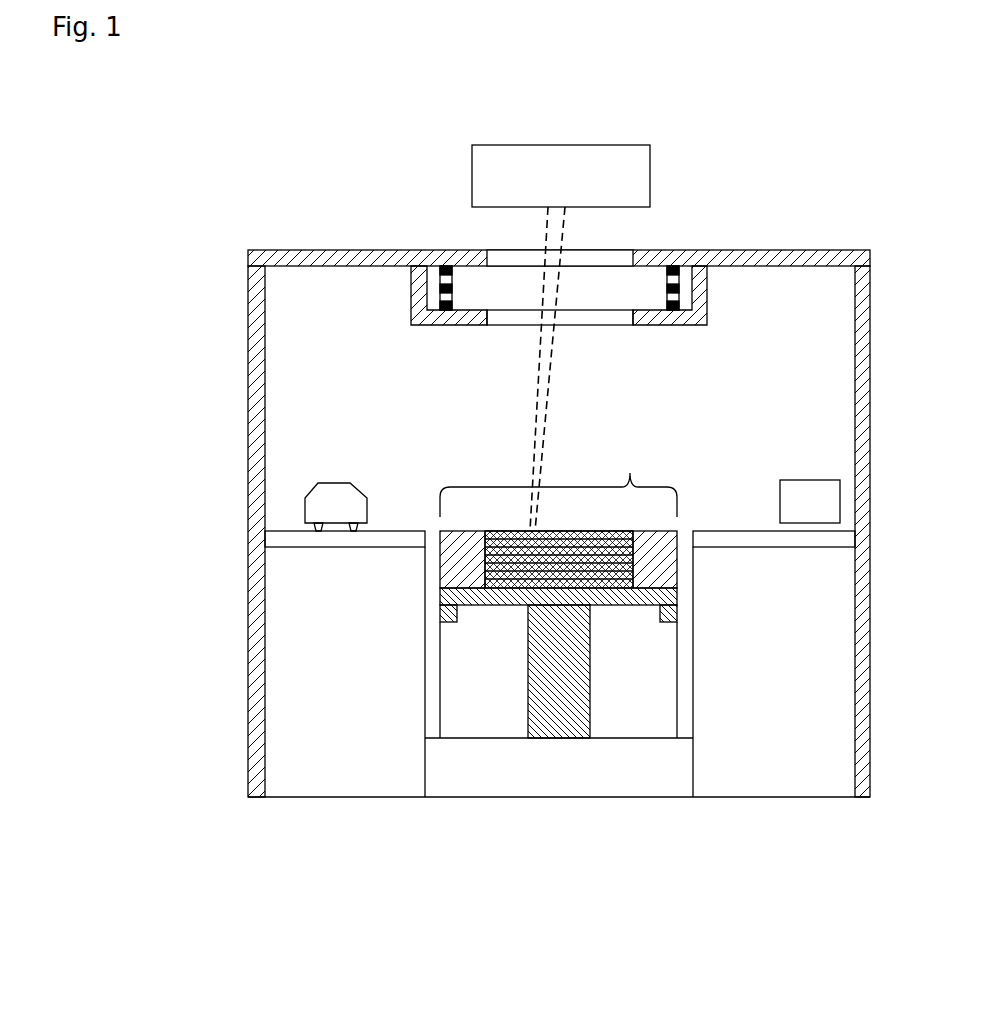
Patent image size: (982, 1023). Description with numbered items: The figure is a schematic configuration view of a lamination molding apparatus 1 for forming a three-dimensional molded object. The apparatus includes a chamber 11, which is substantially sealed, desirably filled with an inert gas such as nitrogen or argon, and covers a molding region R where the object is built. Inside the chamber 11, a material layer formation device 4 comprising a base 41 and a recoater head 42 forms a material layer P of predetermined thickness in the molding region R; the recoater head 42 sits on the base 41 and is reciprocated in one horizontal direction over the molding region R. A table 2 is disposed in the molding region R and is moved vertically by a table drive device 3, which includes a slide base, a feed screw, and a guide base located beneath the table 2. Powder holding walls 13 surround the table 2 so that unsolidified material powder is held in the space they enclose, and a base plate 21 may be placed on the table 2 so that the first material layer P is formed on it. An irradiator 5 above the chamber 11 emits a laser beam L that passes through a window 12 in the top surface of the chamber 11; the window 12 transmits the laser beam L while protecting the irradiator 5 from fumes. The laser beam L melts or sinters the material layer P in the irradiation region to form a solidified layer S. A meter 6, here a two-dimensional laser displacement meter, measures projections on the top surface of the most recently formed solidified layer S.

The lamination molding apparatus 1 is at (350, 176).
The table 2 is at (645, 615).
The table drive device 3 is at (563, 738).
The material layer formation device 4 is at (412, 418).
The irradiator 5 is at (636, 177).
The meter 6 is at (804, 487).
The chamber 11 is at (772, 250).
The window 12 is at (497, 258).
The powder holding walls 13 is at (430, 705).
The base plate 21 is at (500, 607).
The base 41 is at (357, 550).
The recoater head 42 is at (350, 500).
The laser beam L is at (543, 400).
The solidified layer S is at (505, 531).
The material layer P is at (553, 531).
The molding region R is at (558, 476).